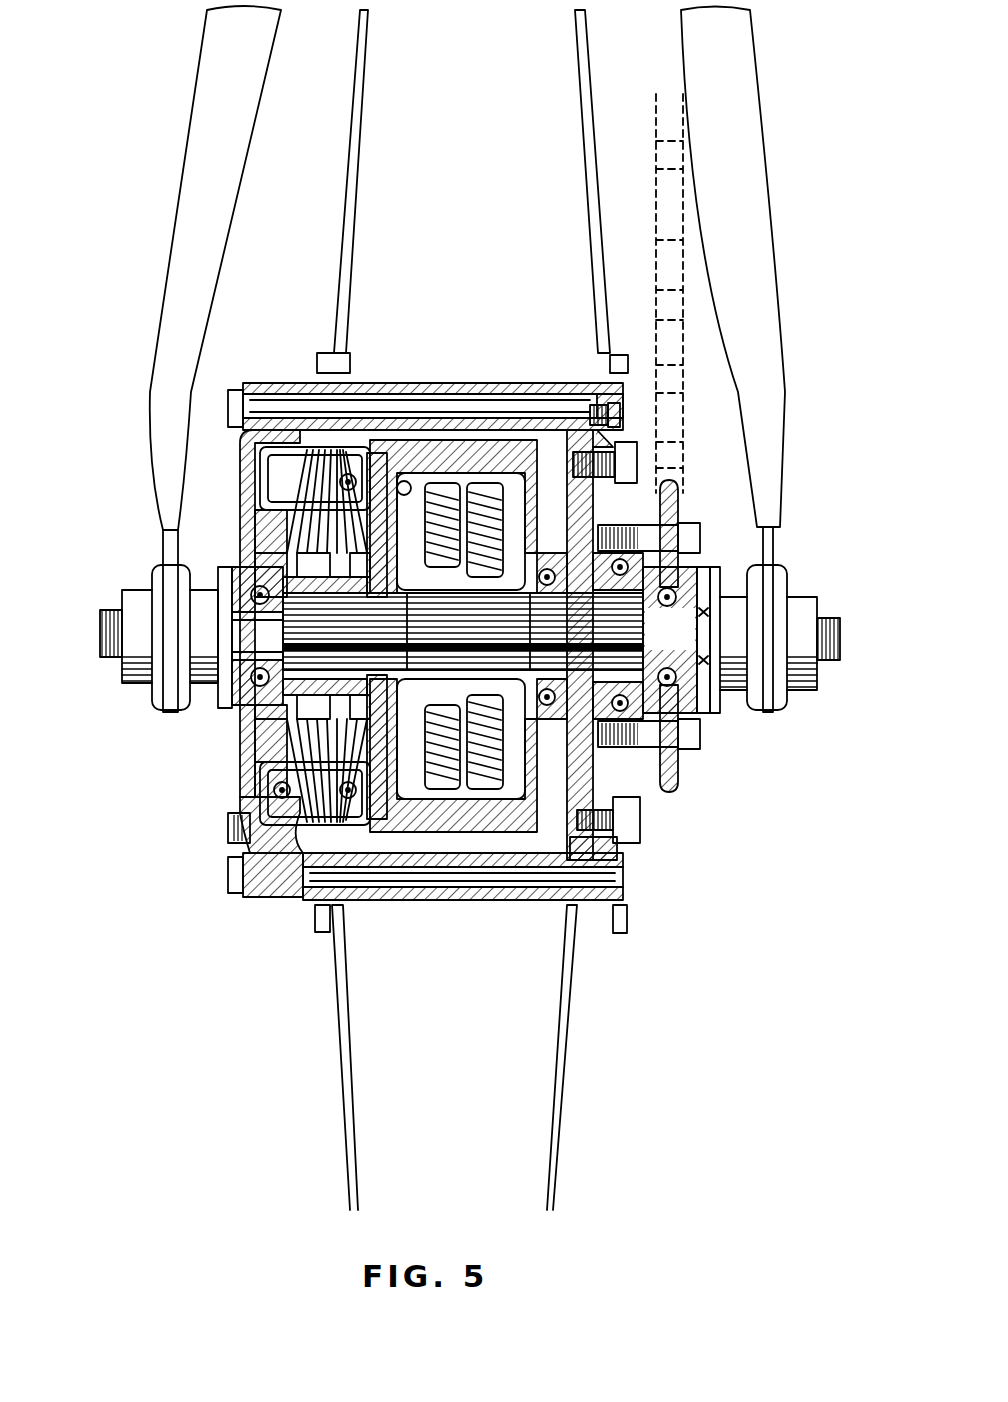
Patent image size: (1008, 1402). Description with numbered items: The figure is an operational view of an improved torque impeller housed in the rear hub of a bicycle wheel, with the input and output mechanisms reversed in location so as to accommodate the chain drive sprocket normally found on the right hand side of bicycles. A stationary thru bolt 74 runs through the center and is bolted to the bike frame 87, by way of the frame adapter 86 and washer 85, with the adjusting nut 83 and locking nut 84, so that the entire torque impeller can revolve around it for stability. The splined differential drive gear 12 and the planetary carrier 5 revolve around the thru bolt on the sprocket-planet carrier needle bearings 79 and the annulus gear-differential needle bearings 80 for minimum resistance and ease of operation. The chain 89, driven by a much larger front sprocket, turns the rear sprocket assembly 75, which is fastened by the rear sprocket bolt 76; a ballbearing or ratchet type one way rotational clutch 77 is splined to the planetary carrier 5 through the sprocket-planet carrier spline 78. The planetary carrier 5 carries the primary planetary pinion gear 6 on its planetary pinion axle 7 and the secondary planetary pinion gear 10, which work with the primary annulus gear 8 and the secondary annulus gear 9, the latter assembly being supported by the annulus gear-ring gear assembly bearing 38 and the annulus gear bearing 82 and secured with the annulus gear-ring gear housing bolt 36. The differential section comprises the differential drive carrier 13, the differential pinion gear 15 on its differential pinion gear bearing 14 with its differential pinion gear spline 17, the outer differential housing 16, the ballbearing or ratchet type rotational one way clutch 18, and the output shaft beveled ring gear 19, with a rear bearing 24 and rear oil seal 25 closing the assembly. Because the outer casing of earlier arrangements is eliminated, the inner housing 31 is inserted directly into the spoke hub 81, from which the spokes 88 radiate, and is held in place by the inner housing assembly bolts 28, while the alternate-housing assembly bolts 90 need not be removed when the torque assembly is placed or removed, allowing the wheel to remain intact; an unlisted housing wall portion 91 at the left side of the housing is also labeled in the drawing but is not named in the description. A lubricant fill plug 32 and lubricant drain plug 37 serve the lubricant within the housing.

The planetary carrier 5 is at (468, 755).
The primary planetary pinion gear 6 is at (507, 483).
The planetary pinion axle 7 is at (512, 517).
The primary annulus gear 8 is at (480, 807).
The secondary annulus gear 9 is at (425, 519).
The secondary planetary pinion gear 10 is at (445, 807).
The splined differential drive gear 12 is at (281, 647).
The differential drive carrier 13 is at (283, 547).
The differential pinion gear bearing 14 is at (255, 745).
The differential pinion gear 15 is at (260, 770).
The outer differential housing 16 is at (315, 512).
The differential pinion gear spline 17 is at (315, 776).
The ballbearing or ratchet type rotational one way clutch 18 is at (250, 816).
The output shaft beveled ring gear 19 is at (272, 530).
The rear bearing 24 is at (240, 710).
The rear oil seal 25 is at (703, 613).
The inner housing assembly bolt 28 is at (473, 410).
The inner housing 31 is at (387, 397).
The lubricant fill plug 32 is at (628, 463).
The annulus gear-ring gear housing bolt 36 is at (520, 447).
The lubricant drain plug 37 is at (640, 823).
The annulus gear-ring gear assembly bearing 38 is at (672, 597).
The thru bolt 74 is at (100, 632).
The rear sprocket assembly 75 is at (675, 500).
The rear sprocket bolt 76 is at (693, 760).
The ballbearing or ratchet type one way rotational clutch 77 is at (620, 537).
The sprocket-planet carrier spline 78 is at (692, 647).
The sprocket-planet carrier needle bearings 79 is at (680, 715).
The annulus gear-differential needle bearings 80 is at (243, 727).
The spoke hub 81 is at (273, 893).
The annulus gear bearing 82 is at (583, 765).
The adjusting nut 83 is at (200, 643).
The locking nut 84 is at (803, 688).
The washer 85 is at (157, 578).
The frame adapter 86 is at (167, 547).
The bike frame 87 is at (226, 223).
The spoke 88 is at (593, 208).
The chain 89 is at (672, 231).
The alternate-housing assembly bolt 90 is at (622, 425).
The housing wall 91 is at (250, 472).